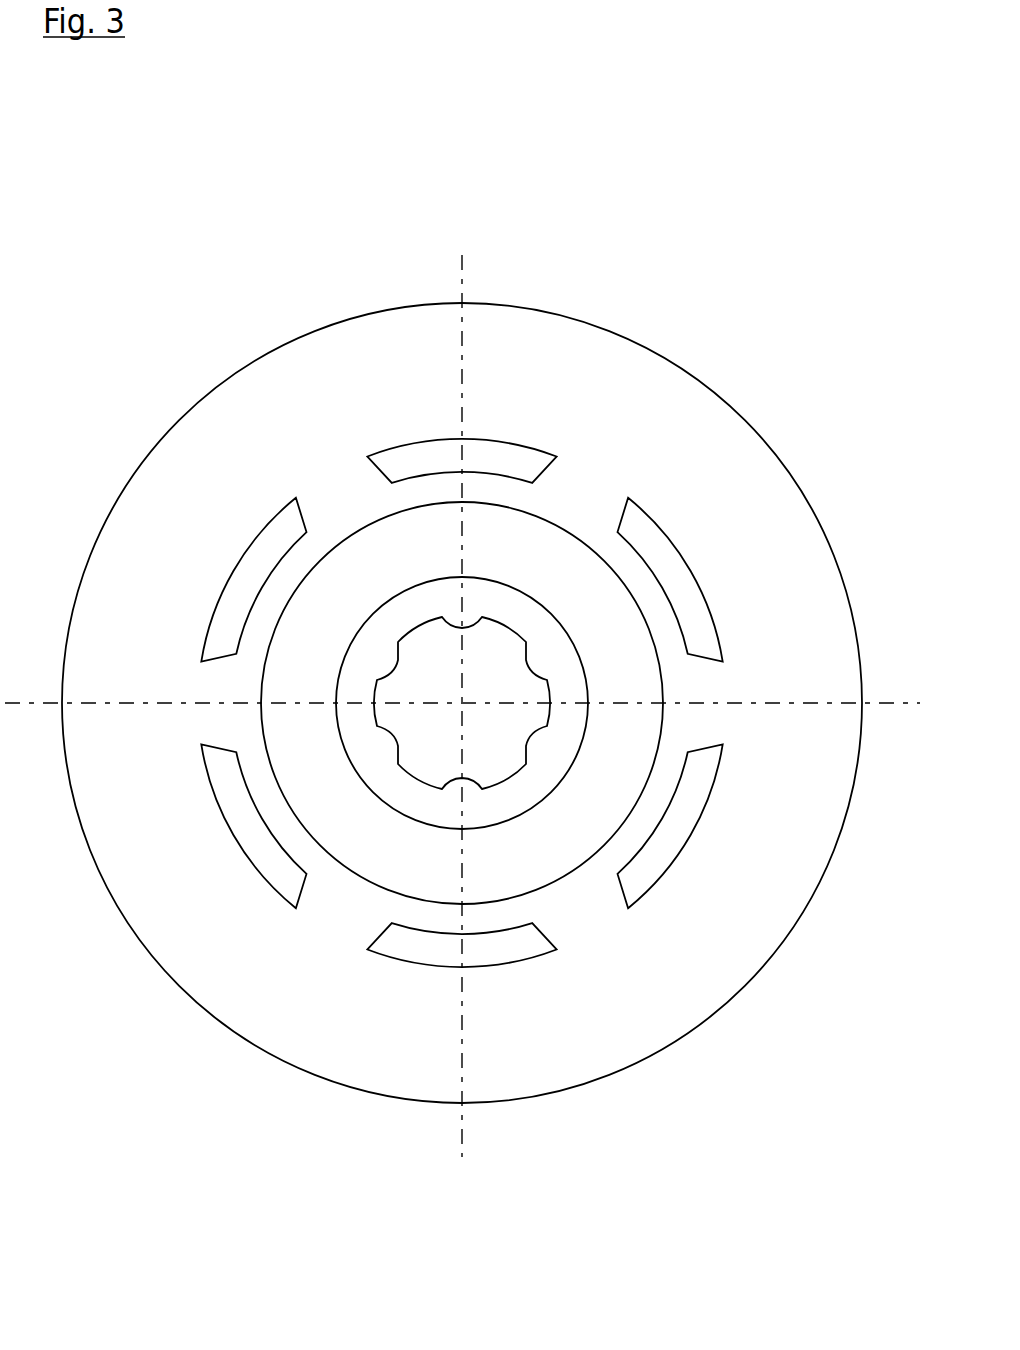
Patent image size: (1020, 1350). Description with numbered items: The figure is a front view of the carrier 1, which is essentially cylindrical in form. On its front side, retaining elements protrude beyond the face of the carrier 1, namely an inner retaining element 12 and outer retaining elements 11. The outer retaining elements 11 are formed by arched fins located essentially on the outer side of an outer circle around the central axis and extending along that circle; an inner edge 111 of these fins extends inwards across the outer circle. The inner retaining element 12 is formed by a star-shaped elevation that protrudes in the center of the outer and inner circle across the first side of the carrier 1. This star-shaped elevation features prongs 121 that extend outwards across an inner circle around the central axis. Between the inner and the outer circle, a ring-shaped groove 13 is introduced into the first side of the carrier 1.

The carrier 1 is at (182, 222).
The outer retaining element 11 is at (241, 580).
The inner edge 111 is at (255, 590).
The ring-shaped groove 13 is at (543, 563).
The inner retaining element 12 is at (482, 687).
The prong 121 is at (547, 690).